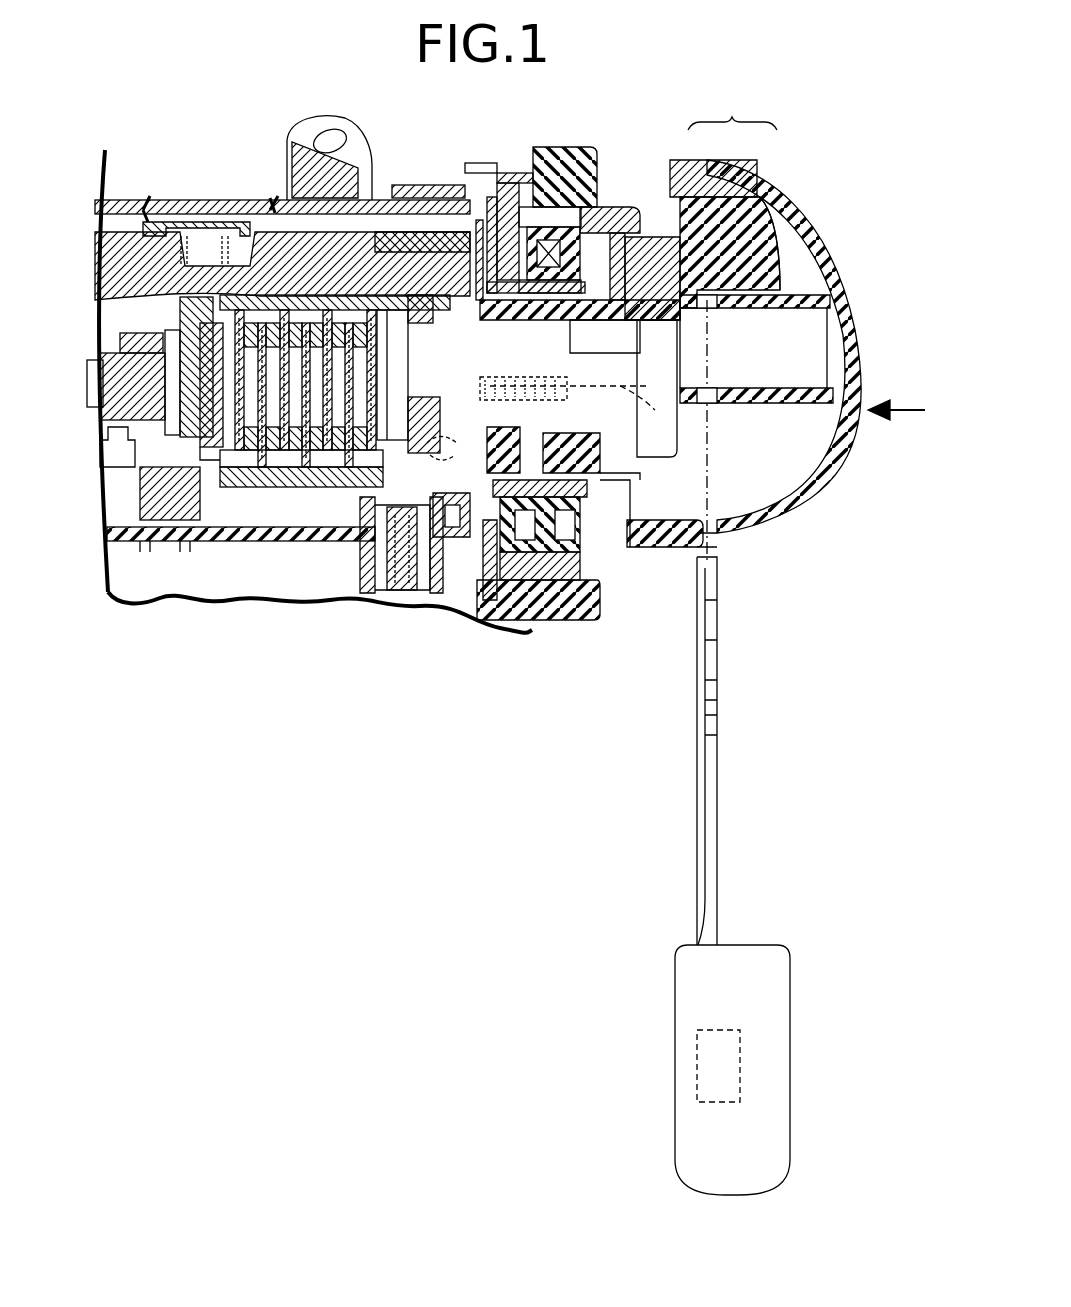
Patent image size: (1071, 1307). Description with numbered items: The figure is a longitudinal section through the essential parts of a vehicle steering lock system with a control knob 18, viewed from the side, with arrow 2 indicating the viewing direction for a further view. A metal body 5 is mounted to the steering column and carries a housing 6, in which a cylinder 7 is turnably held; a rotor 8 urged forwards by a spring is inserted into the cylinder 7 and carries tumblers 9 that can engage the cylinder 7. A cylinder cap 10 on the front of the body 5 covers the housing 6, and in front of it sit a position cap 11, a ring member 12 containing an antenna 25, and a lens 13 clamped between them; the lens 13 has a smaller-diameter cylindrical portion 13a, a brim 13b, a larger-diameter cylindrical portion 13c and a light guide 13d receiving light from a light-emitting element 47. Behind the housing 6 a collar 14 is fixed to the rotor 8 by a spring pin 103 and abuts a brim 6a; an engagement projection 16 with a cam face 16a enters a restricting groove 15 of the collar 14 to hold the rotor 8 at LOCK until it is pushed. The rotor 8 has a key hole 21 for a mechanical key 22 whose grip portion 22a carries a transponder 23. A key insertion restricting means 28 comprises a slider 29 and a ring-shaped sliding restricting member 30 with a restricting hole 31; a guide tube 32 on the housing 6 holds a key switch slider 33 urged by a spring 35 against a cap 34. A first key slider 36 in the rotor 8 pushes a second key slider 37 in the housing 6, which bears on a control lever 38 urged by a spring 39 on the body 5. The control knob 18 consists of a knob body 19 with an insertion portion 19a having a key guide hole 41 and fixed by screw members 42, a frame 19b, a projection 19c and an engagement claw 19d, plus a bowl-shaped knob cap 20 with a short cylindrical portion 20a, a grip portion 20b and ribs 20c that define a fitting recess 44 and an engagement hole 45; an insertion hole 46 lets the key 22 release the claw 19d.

The viewing direction arrow 2 is at (896, 427).
The body 5 is at (175, 208).
The housing 6 is at (275, 460).
The brim 6a is at (150, 490).
The cylinder 7 is at (355, 240).
The rotor 8 is at (258, 490).
The tumblers 9 is at (325, 490).
The cylinder cap 10 is at (435, 185).
The position cap 11 is at (540, 225).
The ring member 12 is at (565, 175).
The lens 13 is at (570, 622).
The smaller-diameter cylindrical portion 13a is at (630, 318).
The brim 13b is at (587, 520).
The larger-diameter cylindrical portion 13c is at (615, 572).
The light guide 13d is at (490, 612).
The collar 14 is at (140, 350).
The restricting groove 15 is at (190, 290).
The engagement projection 16 is at (205, 260).
The cam face 16a is at (175, 315).
The control knob 18 is at (732, 107).
The knob body 19 is at (707, 185).
The insertion portion 19a is at (615, 492).
The frame 19b is at (655, 240).
The projection 19c is at (775, 225).
The engagement claw 19d is at (740, 290).
The knob cap 20 is at (793, 185).
The short cylindrical portion 20a is at (670, 548).
The grip portion 20b is at (830, 258).
The ribs 20c is at (800, 335).
The key hole 21 is at (215, 540).
The mechanical key 22 is at (697, 794).
The grip portion 22a is at (676, 1080).
The transponder 23 is at (690, 1045).
The antenna 25 is at (565, 225).
The key insertion restricting means 28 is at (450, 540).
The slider 29 is at (567, 398).
The sliding restricting member 30 is at (420, 300).
The restricting hole 31 is at (445, 455).
The guide tube 32 is at (340, 490).
The key switch slider 33 is at (398, 575).
The cap 34 is at (385, 560).
The spring 35 is at (425, 595).
The first key slider 36 is at (567, 380).
The second key slider 37 is at (478, 222).
The control lever 38 is at (340, 165).
The spring 39 is at (225, 240).
The key guide hole 41 is at (545, 345).
The screw members 42 is at (647, 410).
The fitting recess 44 is at (832, 300).
The engagement hole 45 is at (710, 340).
The insertion hole 46 is at (712, 545).
The light-emitting element 47 is at (490, 605).
The spring pin 103 is at (170, 390).